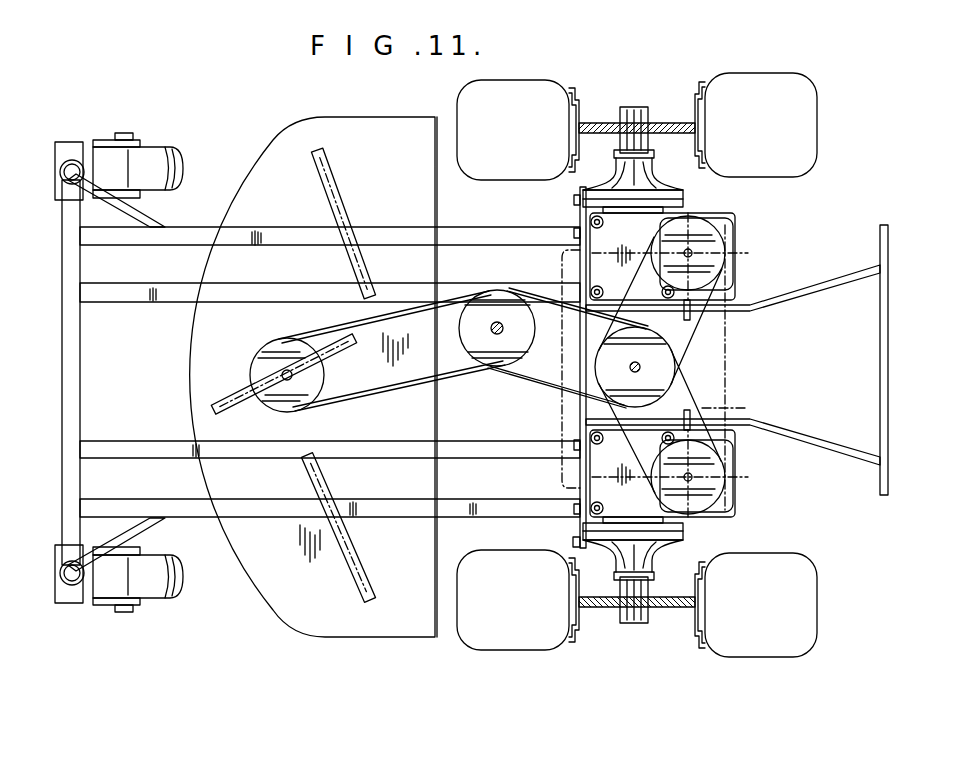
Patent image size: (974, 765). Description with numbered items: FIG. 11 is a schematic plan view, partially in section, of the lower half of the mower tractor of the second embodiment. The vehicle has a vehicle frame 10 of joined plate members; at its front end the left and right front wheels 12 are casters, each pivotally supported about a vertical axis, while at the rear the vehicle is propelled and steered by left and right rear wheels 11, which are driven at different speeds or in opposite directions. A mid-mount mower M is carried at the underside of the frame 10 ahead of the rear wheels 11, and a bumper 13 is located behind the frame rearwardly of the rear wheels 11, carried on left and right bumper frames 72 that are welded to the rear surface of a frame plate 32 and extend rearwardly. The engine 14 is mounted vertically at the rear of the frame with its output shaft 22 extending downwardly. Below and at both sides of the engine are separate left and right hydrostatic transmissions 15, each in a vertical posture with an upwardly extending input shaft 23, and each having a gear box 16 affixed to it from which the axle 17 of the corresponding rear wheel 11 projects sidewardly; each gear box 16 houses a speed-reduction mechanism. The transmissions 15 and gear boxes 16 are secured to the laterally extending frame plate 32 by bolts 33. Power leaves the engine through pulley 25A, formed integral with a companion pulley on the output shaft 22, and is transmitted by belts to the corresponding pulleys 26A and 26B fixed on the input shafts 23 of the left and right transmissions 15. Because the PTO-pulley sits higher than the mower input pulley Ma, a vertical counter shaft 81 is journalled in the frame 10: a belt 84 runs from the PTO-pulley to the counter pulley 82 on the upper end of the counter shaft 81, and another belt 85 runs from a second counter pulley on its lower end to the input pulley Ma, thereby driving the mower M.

The vehicle frame 10 is at (270, 233).
The rear wheels 11 is at (545, 80).
The front wheels 12 is at (168, 162).
The bumper 13 is at (888, 322).
The engine 14 is at (745, 408).
The hydrostatic transmissions 15 is at (600, 267).
The gear box 16 is at (640, 195).
The axle 17 is at (639, 107).
The engine output shaft 22 is at (643, 363).
The input shaft 23 is at (656, 263).
The pulley 25A is at (653, 385).
The pulley 26A is at (703, 496).
The pulley 26B is at (703, 233).
The frame plate 32 is at (578, 330).
The bolts 33 is at (574, 541).
The bumper frames 72 is at (742, 302).
The counter shaft 81 is at (492, 340).
The counter pulley 82 is at (480, 318).
The belt 84 is at (530, 378).
The belt 85 is at (383, 393).
The mower M is at (266, 613).
The input pulley Ma is at (260, 366).